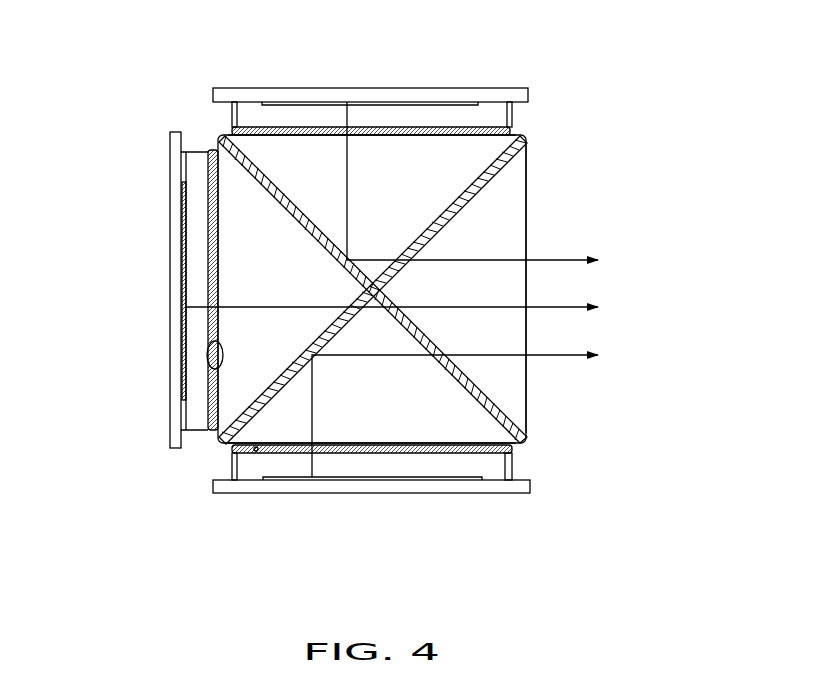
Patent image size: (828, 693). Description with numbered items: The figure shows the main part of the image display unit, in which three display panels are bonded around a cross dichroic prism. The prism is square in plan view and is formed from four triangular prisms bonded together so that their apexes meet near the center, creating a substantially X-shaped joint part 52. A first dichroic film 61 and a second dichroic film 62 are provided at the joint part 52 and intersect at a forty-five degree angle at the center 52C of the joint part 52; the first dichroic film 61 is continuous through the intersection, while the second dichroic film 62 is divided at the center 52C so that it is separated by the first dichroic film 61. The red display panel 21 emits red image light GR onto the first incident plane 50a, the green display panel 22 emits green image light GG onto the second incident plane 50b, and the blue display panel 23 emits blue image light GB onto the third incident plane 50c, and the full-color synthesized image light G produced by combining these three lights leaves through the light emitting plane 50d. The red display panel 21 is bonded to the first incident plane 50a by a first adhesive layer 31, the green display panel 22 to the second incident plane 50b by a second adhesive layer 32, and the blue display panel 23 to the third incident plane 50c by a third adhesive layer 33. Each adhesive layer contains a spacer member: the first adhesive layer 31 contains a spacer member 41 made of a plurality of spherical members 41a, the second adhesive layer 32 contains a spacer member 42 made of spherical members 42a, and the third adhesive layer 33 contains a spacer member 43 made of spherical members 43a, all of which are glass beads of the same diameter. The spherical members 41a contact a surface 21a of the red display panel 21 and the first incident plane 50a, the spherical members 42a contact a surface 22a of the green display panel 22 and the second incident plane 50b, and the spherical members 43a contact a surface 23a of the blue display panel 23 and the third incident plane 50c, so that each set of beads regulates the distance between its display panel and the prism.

The red display panel 21 is at (346, 500).
The surface of the red display panel 21a is at (468, 438).
The green display panel 22 is at (133, 261).
The surface of the green display panel 22a is at (212, 372).
The blue display panel 23 is at (430, 78).
The surface of the blue display panel 23a is at (318, 103).
The first adhesive layer 31 is at (415, 452).
The second adhesive layer 32 is at (208, 325).
The third adhesive layer 33 is at (467, 127).
The spacer member 41 is at (346, 500).
The first spherical members 41a is at (506, 453).
The spacer member 42 is at (130, 252).
The second spherical members 42a is at (212, 150).
The spacer member 43 is at (430, 83).
The third spherical members 43a is at (237, 100).
The first incident plane 50a is at (340, 455).
The second incident plane 50b is at (217, 250).
The third incident plane 50c is at (405, 137).
The light emitting plane 50d is at (527, 178).
The joint part 52 is at (372, 284).
The center of the joint part 52C is at (366, 290).
The first dichroic film 61 is at (525, 155).
The second dichroic film 62 is at (242, 173).
The red image light GR is at (560, 358).
The green image light GG is at (583, 313).
The blue image light GB is at (588, 266).
The synthesized image light G is at (707, 468).